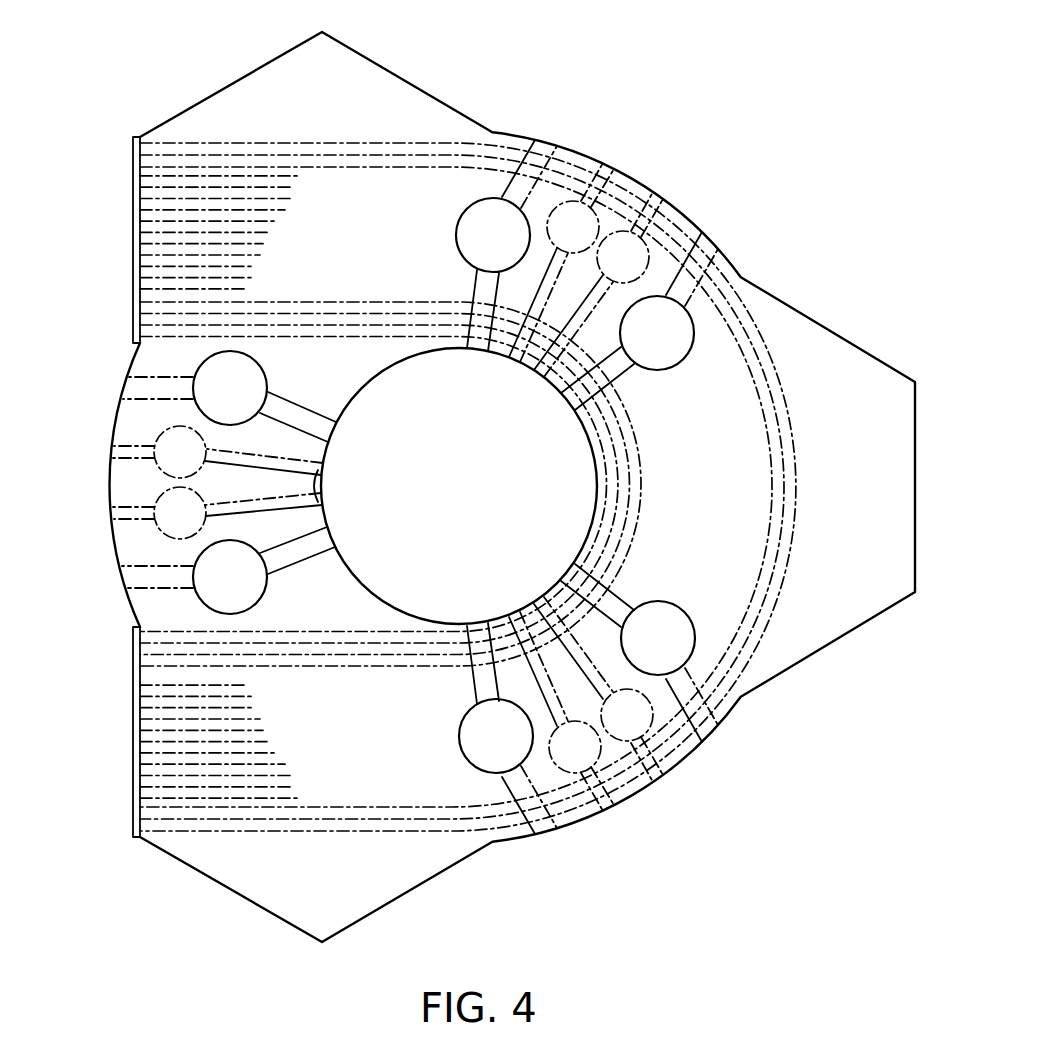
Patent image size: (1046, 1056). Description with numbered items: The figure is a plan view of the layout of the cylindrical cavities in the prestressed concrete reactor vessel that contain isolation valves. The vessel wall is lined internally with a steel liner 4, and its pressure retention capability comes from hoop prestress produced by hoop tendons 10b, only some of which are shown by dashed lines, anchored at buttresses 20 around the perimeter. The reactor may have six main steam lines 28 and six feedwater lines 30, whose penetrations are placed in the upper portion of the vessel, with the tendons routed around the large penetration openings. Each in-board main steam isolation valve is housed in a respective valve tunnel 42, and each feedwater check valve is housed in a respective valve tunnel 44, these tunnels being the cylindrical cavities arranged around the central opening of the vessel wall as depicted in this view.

The steel liner 4 is at (575, 141).
The hoop tendons 10b is at (641, 483).
The buttresses 20 is at (133, 152).
The main steam lines 28 is at (470, 282).
The feedwater lines 30 is at (548, 294).
The valve tunnel 42 is at (466, 216).
The valve tunnel 44 is at (622, 243).